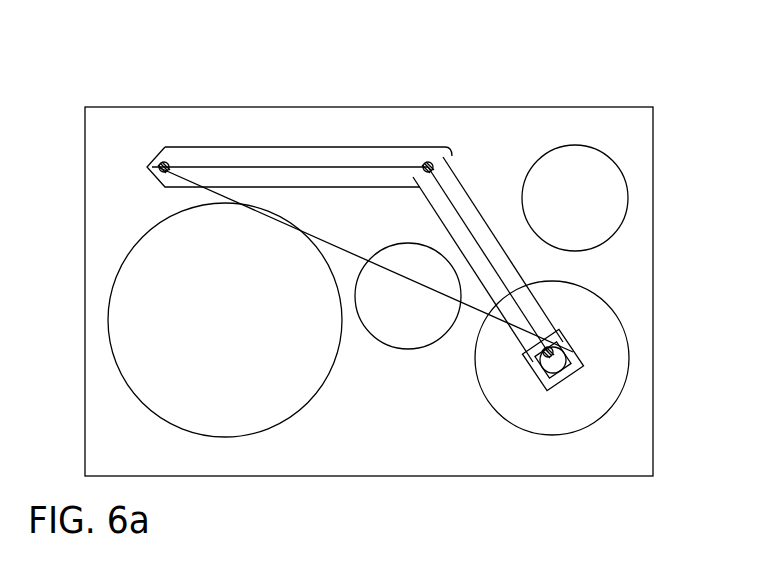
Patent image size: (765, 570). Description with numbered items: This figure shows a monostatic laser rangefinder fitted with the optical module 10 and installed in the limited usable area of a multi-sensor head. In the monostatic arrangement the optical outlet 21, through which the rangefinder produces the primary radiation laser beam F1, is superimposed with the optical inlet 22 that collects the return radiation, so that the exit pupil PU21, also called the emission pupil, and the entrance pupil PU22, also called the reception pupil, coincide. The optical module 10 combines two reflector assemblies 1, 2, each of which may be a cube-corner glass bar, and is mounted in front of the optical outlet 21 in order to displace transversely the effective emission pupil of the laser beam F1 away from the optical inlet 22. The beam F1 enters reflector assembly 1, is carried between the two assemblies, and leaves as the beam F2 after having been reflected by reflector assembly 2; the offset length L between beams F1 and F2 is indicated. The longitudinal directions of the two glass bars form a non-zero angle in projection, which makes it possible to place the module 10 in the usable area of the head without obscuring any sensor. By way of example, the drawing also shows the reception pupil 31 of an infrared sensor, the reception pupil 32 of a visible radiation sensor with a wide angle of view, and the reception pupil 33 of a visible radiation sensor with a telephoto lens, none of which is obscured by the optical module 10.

The optical module 10 is at (355, 189).
The reflector assembly 1 is at (477, 215).
The reflector assembly 2 is at (385, 158).
The optical outlet 21 is at (572, 366).
The optical inlet 22 is at (533, 435).
The reception pupil of infrared sensor 31 is at (212, 330).
The reception pupil of visible radiation sensor with wide angle of view 32 is at (395, 317).
The reception pupil of visible radiation sensor with telephoto lens 33 is at (562, 209).
The primary radiation laser beam F1 is at (565, 352).
The laser beam after reflection by reflector assembly 2 F2 is at (162, 168).
The offset length L is at (343, 257).
The exit pupil PU21 is at (565, 385).
The entrance pupil PU22 is at (523, 388).